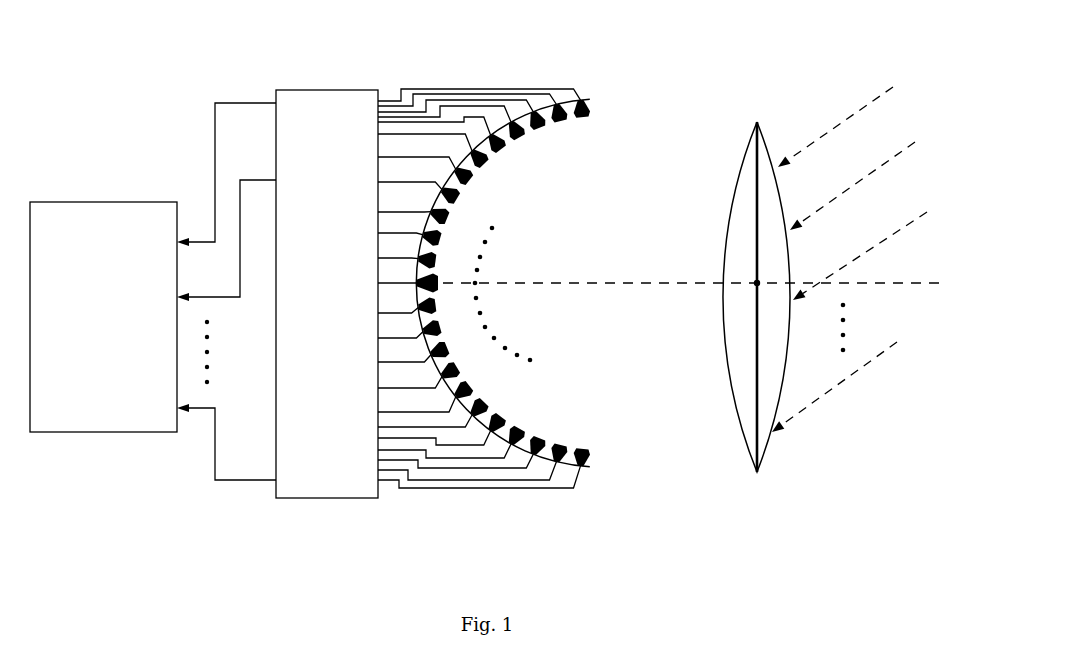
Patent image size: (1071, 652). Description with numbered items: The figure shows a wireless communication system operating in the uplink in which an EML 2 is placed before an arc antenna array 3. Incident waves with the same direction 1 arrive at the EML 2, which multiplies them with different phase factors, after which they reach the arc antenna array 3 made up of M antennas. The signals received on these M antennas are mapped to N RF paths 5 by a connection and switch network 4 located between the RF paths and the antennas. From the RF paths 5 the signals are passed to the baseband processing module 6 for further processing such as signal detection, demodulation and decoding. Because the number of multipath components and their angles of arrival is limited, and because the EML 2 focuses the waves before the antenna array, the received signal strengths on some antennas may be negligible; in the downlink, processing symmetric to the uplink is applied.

The incident waves with the same direction 1 is at (849, 227).
The EML 2 is at (756, 272).
The arc antenna array 3 is at (514, 288).
The connection and switch network 4 is at (327, 281).
The RF paths 5 is at (226, 269).
The baseband processing module 6 is at (103, 305).